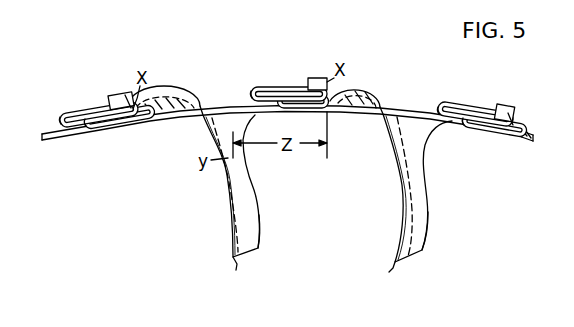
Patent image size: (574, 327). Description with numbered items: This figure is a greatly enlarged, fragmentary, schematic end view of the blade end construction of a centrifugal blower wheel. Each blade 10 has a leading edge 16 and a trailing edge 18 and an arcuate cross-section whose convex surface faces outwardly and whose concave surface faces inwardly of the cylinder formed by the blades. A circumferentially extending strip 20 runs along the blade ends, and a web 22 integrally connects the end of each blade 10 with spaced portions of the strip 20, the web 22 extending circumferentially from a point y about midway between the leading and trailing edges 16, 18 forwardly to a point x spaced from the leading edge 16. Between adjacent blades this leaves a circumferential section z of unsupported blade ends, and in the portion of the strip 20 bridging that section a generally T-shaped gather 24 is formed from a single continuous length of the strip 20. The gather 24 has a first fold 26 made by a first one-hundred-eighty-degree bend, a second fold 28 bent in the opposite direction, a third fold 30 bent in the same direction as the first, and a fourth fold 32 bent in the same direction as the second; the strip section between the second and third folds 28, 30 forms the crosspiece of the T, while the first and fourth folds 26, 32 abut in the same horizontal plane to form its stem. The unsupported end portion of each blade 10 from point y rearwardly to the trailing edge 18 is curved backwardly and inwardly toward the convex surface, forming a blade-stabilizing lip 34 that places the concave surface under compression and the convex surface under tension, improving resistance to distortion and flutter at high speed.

The blade 10 is at (234, 207).
The leading edge 16 is at (110, 97).
The trailing edge 18 is at (236, 271).
The strip 20 is at (143, 128).
The web 22 is at (170, 97).
The T-shaped gather 24 is at (77, 106).
The first fold 26 is at (88, 126).
The second fold 28 is at (67, 113).
The third fold 30 is at (120, 95).
The fourth fold 32 is at (108, 126).
The blade-stabilizing lip 34 is at (259, 226).